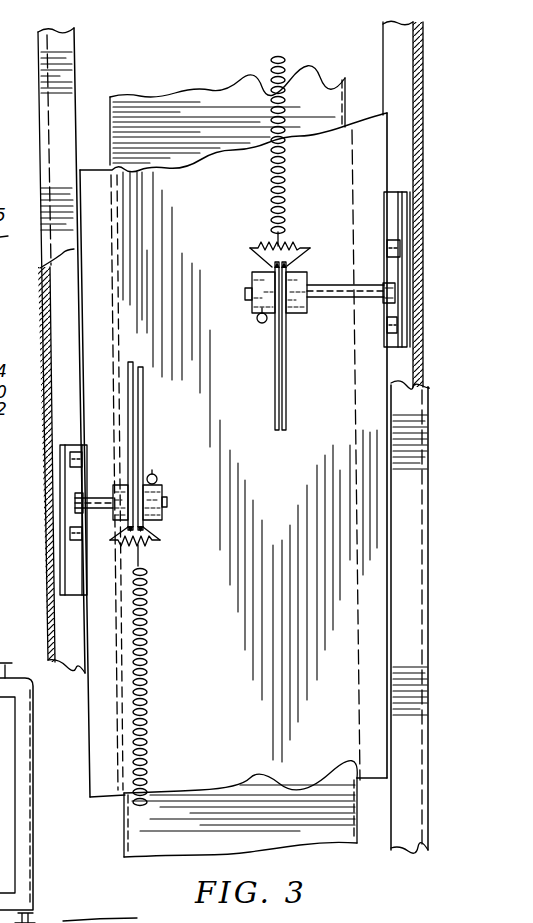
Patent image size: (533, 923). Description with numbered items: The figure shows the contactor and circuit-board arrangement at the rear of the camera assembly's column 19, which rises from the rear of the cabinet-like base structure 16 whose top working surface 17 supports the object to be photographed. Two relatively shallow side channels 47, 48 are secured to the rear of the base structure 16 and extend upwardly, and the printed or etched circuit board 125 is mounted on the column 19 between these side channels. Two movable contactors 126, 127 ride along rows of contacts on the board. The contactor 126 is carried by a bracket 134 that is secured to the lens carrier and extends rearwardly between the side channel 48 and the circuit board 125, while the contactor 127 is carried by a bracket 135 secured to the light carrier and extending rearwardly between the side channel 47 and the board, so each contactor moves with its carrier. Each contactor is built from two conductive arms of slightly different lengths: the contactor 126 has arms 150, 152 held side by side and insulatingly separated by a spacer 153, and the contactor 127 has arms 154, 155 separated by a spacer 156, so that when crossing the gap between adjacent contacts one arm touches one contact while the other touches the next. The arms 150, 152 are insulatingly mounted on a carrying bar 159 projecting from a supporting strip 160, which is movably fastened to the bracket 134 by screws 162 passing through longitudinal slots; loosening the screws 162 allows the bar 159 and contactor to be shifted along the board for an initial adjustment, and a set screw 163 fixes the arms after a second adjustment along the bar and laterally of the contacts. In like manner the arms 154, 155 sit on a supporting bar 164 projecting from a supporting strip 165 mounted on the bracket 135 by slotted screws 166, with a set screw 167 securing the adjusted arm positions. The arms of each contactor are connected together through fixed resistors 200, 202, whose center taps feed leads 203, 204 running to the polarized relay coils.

The base structure 16 is at (38, 780).
The top working surface 17 is at (15, 677).
The column 19 is at (430, 528).
The side channel 47 is at (47, 432).
The side channel 48 is at (423, 350).
The printed or etched circuit board 125 is at (90, 767).
The contactor 126 is at (277, 346).
The contactor 127 is at (139, 447).
The bracket 134 is at (386, 259).
The bracket 135 is at (61, 508).
The conductive arm 150 is at (276, 407).
The conductive arm 152 is at (288, 374).
The insulating spacer 153 is at (272, 320).
The conductive arm 154 is at (133, 413).
The conductive arm 155 is at (143, 416).
The insulating spacer 156 is at (163, 521).
The carrying bar 159 is at (327, 292).
The supporting strip 160 is at (400, 270).
The screws 162 is at (388, 247).
The set screw 163 is at (257, 318).
The supporting bar 164 is at (105, 510).
The supporting strip 165 is at (68, 488).
The screws 166 is at (78, 452).
The set screw 167 is at (154, 481).
The fixed resistor 200 is at (270, 234).
The fixed resistor 202 is at (148, 548).
The lead 203 is at (270, 152).
The lead 204 is at (145, 650).